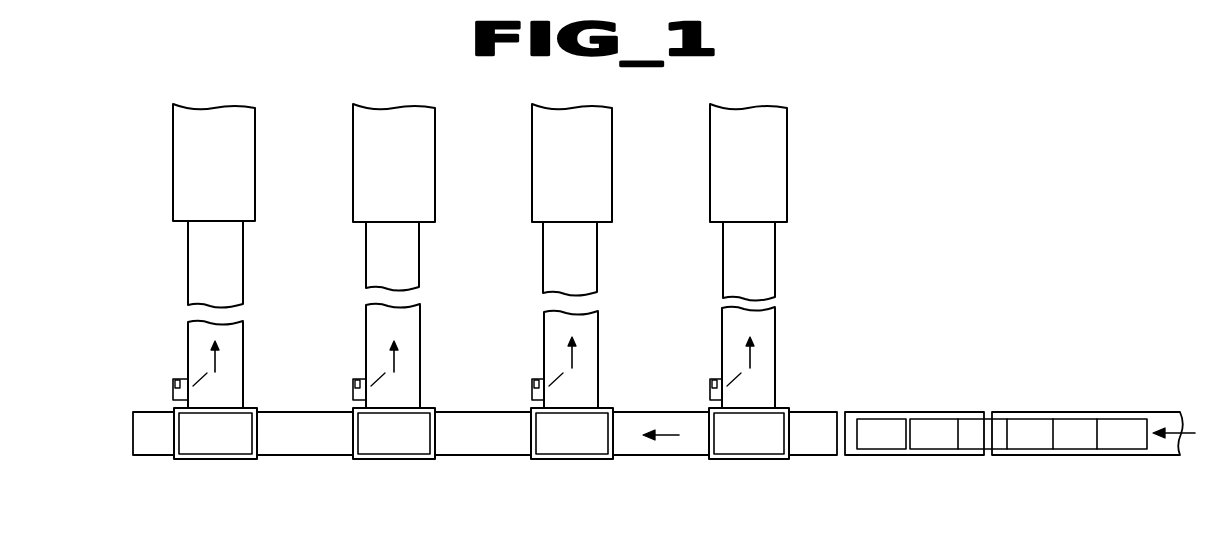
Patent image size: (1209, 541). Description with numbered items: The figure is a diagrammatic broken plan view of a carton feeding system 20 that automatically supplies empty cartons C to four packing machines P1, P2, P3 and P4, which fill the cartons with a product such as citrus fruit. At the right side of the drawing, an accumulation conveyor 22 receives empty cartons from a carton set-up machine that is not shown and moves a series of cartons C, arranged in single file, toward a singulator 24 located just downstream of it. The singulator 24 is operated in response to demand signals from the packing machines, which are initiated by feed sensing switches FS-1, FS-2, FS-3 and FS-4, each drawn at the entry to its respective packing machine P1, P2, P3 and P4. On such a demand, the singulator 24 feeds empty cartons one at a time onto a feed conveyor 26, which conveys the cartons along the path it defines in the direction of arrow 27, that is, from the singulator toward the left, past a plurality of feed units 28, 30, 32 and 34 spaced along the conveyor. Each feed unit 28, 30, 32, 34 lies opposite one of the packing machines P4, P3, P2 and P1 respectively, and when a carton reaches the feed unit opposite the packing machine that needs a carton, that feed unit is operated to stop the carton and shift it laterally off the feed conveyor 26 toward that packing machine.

The carton feeding system 20 is at (383, 482).
The accumulation conveyor 22 is at (1057, 412).
The singulator 24 is at (892, 408).
The feed conveyor 26 is at (472, 456).
The arrow 27 is at (670, 436).
The feed unit 28 is at (768, 444).
The feed unit 30 is at (591, 444).
The feed unit 32 is at (413, 444).
The feed unit 34 is at (234, 444).
The cartons C is at (895, 450).
The feed sensing switch FS-1 is at (175, 386).
The feed sensing switch FS-2 is at (355, 386).
The feed sensing switch FS-3 is at (534, 386).
The feed sensing switch FS-4 is at (712, 386).
The packing machine P1 is at (225, 167).
The packing machine P2 is at (404, 167).
The packing machine P3 is at (582, 167).
The packing machine P4 is at (759, 167).